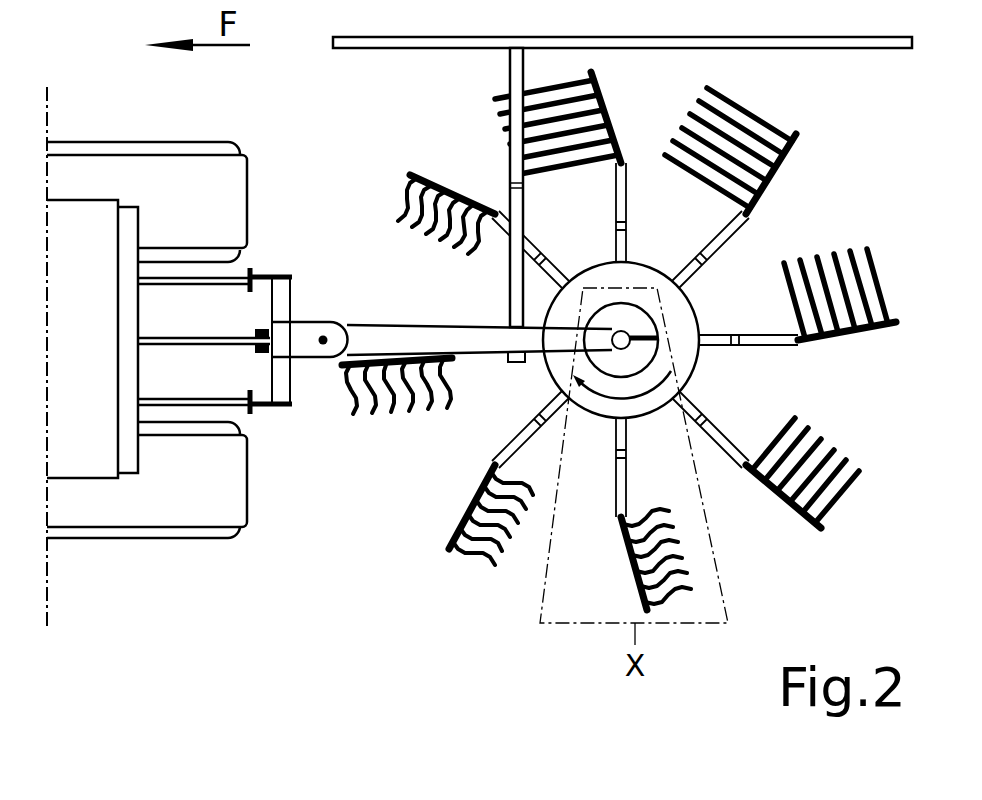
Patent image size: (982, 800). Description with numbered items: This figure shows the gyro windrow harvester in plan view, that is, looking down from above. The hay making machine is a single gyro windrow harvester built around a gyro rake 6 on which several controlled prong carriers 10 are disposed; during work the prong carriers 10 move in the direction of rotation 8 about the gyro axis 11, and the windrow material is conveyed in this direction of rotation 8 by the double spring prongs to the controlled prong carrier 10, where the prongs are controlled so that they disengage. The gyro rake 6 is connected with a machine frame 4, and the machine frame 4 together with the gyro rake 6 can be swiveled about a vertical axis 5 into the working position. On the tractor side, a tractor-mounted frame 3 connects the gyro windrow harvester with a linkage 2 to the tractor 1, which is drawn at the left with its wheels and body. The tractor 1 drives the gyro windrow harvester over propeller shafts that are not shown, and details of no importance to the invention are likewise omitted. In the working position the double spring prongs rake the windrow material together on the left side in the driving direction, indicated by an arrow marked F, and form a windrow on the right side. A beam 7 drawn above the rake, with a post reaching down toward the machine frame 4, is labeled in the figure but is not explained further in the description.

The tractor 1 is at (230, 203).
The linkage 2 is at (185, 398).
The tractor-mounted frame 3 is at (285, 400).
The machine frame 4 is at (403, 340).
The vertical axis 5 is at (322, 336).
The gyro rake 6 is at (619, 341).
The frame beam 7 is at (372, 48).
The direction of rotation 8 is at (616, 397).
The controlled prong carrier 10 is at (528, 430).
The gyro axis 11 is at (619, 333).